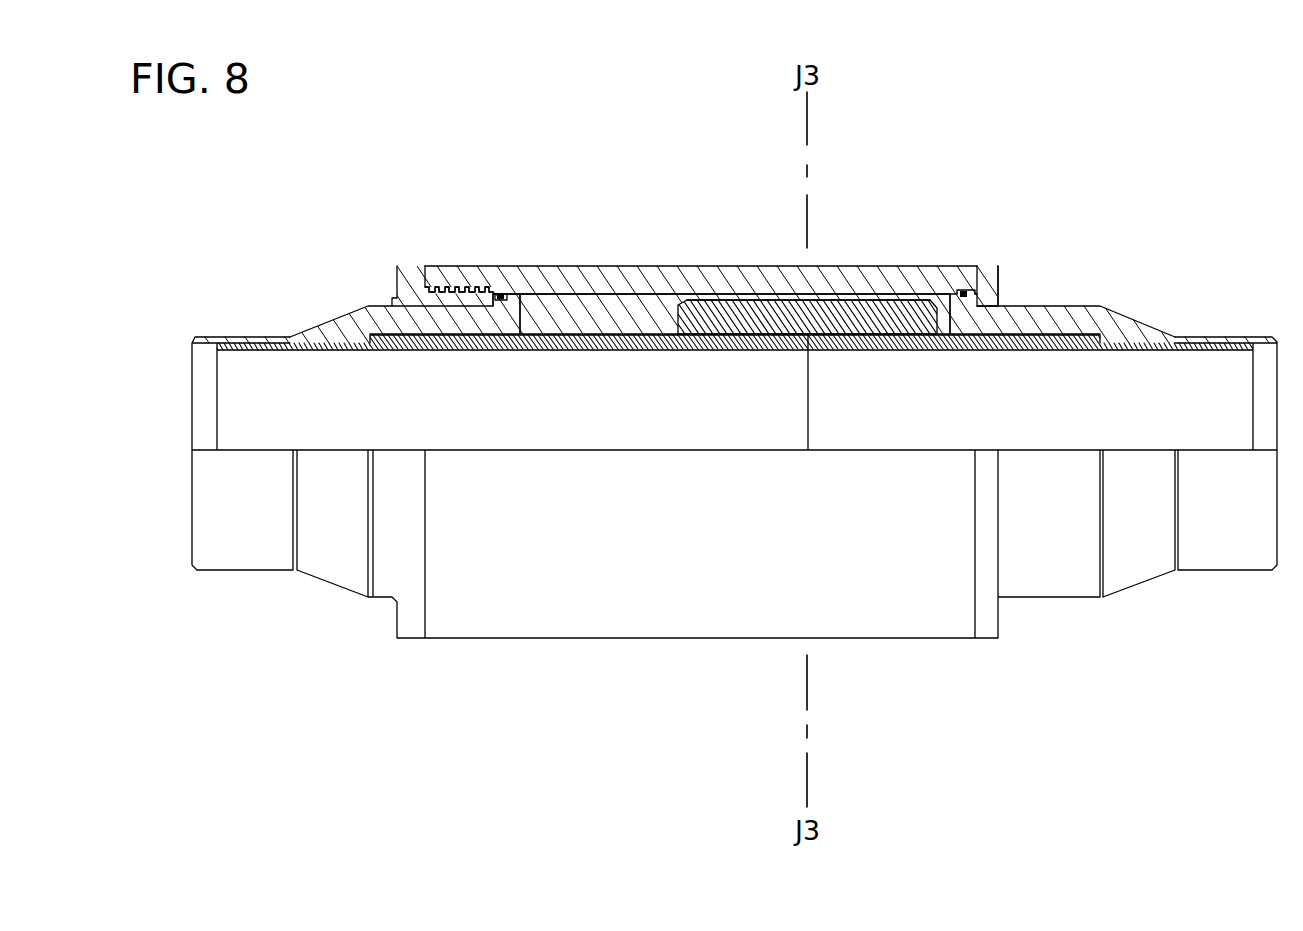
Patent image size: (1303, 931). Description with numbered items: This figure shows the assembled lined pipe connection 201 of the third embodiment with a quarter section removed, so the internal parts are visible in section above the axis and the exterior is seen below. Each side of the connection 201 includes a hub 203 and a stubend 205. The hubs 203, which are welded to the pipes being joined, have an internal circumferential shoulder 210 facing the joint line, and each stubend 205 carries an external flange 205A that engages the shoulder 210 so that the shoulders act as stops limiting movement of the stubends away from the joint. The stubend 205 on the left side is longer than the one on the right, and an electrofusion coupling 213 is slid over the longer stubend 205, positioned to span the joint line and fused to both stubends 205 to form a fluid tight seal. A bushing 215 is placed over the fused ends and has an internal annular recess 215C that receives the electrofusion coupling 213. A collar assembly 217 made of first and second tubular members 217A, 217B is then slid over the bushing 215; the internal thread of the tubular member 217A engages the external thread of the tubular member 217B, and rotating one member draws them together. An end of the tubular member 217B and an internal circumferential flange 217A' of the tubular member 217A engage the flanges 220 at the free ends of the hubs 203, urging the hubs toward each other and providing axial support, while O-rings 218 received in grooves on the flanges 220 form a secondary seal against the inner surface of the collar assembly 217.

The connection 201 is at (1102, 182).
The hub 203 is at (315, 334).
The stubend 205 is at (604, 335).
The external flange 205A is at (318, 322).
The internal circumferential shoulder 210 is at (358, 334).
The electrofusion coupling 213 is at (830, 300).
The bushing 215 is at (652, 294).
The internal annular recess 215C is at (752, 300).
The collar assembly 217 is at (540, 258).
The first tubular member 217A is at (1028, 214).
The internal circumferential flange 217A' is at (1030, 273).
The second tubular member 217B is at (405, 268).
The O-ring 218 is at (503, 289).
The flange 220 is at (500, 294).